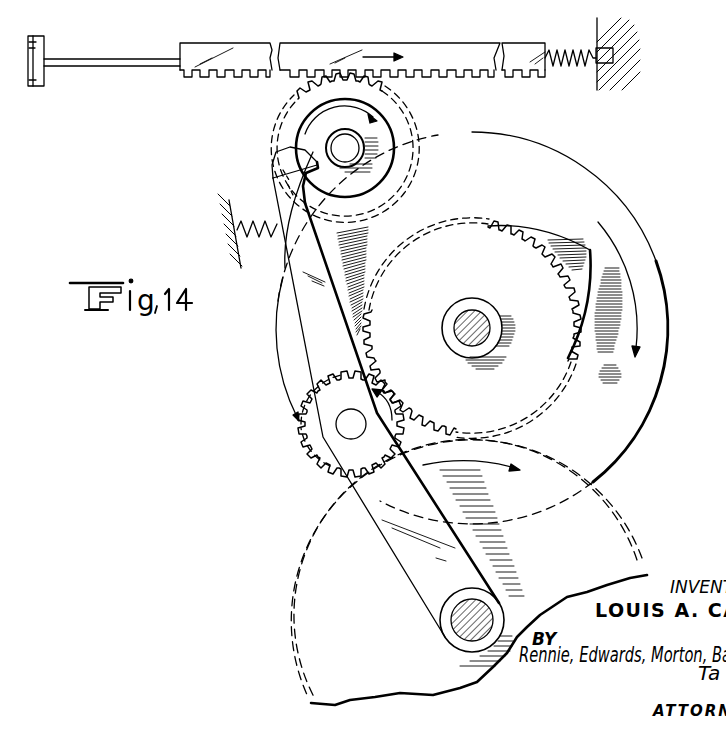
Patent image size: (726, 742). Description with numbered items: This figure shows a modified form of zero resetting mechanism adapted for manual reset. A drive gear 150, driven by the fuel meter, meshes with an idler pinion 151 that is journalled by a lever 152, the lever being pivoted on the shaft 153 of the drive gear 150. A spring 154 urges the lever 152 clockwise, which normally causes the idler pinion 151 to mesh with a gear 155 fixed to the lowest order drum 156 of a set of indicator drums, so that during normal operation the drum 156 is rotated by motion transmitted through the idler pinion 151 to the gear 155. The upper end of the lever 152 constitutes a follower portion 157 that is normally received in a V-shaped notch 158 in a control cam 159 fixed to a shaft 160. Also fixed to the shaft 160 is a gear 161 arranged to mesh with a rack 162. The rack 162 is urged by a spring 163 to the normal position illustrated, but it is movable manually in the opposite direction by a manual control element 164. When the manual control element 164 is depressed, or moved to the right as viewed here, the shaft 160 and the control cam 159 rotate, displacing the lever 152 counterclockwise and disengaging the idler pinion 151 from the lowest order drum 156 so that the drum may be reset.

The drive gear 150 is at (607, 540).
The idler pinion 151 is at (320, 466).
The lever 152 is at (425, 573).
The shaft 153 is at (463, 628).
The spring 154 is at (247, 241).
The gear 155 is at (487, 242).
The lowest order drum 156 is at (613, 228).
The follower portion 157 is at (277, 157).
The V-shaped notch 158 is at (277, 183).
The control cam 159 is at (380, 136).
The shaft 160 is at (344, 142).
The gear 161 is at (292, 95).
The rack 162 is at (413, 52).
The spring 163 is at (561, 49).
The manual control element 164 is at (79, 64).